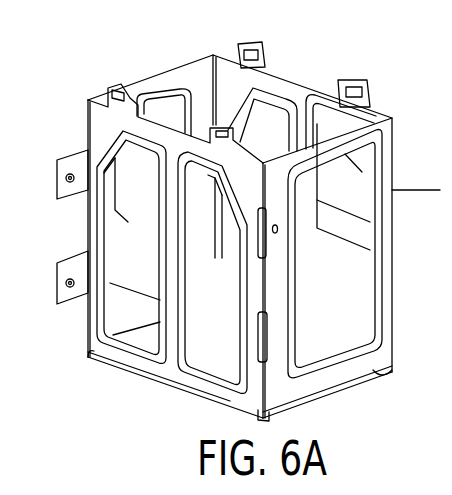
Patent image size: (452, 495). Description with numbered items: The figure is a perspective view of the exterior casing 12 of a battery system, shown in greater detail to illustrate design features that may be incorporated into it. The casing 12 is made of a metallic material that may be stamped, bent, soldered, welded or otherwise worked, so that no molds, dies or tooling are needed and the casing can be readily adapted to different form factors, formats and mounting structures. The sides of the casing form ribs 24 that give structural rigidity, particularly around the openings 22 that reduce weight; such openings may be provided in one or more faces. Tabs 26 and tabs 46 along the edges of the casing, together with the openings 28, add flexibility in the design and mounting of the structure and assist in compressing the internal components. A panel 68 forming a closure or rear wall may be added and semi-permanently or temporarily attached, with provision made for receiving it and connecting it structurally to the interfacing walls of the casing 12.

The exterior casing 12 is at (240, 238).
The openings 22 is at (146, 338).
The ribs 24 is at (127, 365).
The tabs 26 is at (72, 190).
The openings 28 is at (263, 353).
The tabs 46 is at (339, 82).
The panel 68 is at (422, 195).